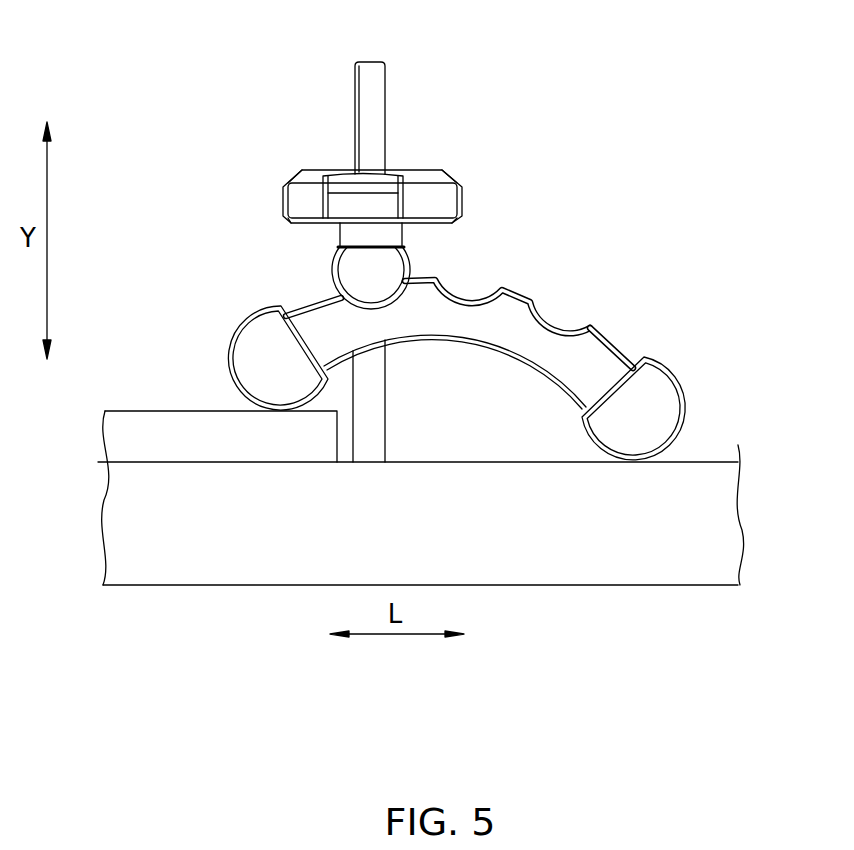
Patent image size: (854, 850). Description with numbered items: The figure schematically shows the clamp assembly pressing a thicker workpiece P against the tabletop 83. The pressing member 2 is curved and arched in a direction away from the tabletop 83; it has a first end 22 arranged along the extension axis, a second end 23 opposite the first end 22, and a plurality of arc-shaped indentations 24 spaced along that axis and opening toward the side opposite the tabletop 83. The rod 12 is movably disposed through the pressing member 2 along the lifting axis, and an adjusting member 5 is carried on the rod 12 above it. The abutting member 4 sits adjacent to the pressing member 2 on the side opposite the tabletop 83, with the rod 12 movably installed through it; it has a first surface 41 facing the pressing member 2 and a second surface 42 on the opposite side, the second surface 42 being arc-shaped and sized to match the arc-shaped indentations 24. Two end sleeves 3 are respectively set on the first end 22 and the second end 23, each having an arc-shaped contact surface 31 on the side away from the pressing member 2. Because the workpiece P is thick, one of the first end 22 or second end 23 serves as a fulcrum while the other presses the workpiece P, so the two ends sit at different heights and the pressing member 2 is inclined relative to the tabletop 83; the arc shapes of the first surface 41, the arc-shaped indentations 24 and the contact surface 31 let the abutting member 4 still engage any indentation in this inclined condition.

The rod 12 is at (377, 95).
The adjusting member 5 is at (421, 190).
The second surface 42 is at (372, 244).
The abutting member 4 is at (392, 268).
The first surface 41 is at (388, 312).
The pressing member 2 is at (508, 315).
The first end 22 is at (306, 316).
The second end 23 is at (600, 357).
The arc-shaped indentations 24 is at (481, 297).
The end sleeves 3 is at (255, 330).
The contact surface 31 is at (231, 363).
The tabletop 83 is at (131, 460).
The workpiece P is at (177, 418).